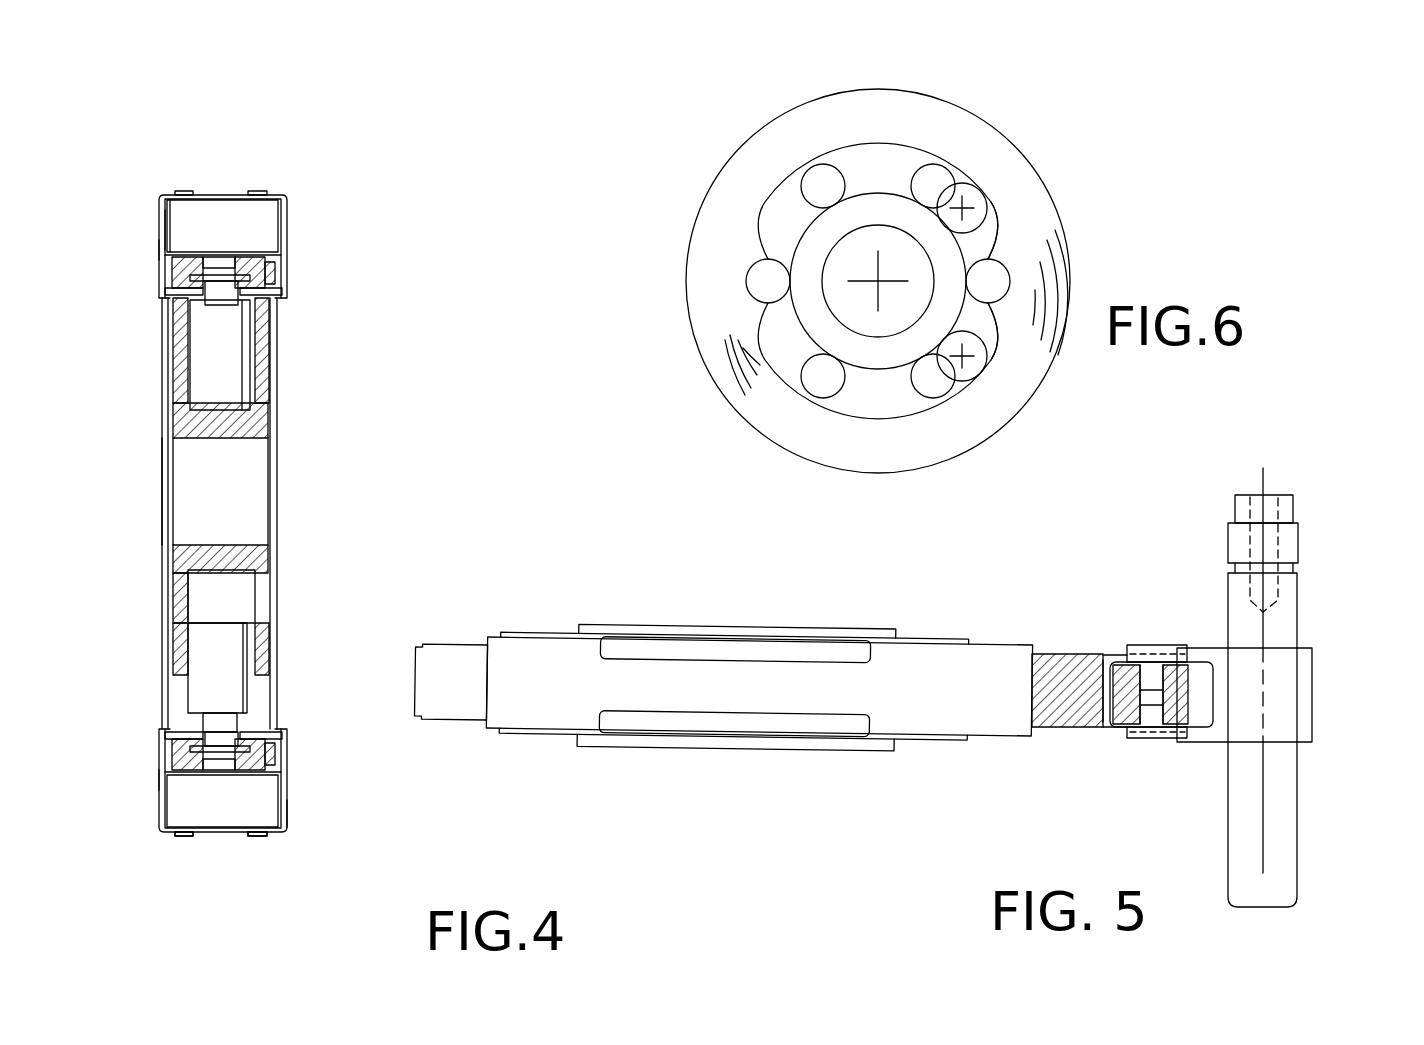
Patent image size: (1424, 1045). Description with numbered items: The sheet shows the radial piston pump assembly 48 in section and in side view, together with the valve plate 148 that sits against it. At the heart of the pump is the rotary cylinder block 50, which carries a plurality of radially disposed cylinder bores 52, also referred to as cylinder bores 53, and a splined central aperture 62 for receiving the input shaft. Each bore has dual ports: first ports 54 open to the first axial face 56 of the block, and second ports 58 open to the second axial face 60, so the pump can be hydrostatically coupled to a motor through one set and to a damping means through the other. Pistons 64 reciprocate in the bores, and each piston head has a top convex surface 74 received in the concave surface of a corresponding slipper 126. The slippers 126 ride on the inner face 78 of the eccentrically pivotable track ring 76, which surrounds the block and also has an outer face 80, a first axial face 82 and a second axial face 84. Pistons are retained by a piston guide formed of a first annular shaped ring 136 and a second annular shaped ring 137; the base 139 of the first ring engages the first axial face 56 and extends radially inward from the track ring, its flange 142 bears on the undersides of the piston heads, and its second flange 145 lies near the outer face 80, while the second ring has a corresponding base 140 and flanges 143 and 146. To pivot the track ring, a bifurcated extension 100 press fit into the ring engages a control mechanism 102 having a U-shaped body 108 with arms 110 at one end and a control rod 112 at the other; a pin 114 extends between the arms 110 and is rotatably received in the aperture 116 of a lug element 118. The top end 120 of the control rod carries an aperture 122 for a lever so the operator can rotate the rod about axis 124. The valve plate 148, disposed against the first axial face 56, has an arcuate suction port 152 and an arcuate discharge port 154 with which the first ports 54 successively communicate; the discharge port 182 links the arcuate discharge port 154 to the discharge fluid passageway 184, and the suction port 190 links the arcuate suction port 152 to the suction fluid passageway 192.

In FIG. 4, the radial piston pump assembly 48 is at (330, 374).
In FIG. 5, the radial piston pump assembly 48 is at (620, 786).
In FIG. 4, the rotary cylinder block 50 is at (175, 318).
In FIG. 4, the cylinder bores 52 is at (245, 583).
In FIG. 6, the cylinder bores 53 is at (822, 183).
In FIG. 4, the first ports 54 is at (180, 380).
In FIG. 4, the first axial face 56 is at (172, 640).
In FIG. 4, the second ports 58 is at (262, 388).
In FIG. 4, the second axial face 60 is at (270, 672).
In FIG. 4, the splined central aperture 62 is at (250, 485).
In FIG. 4, the pistons 64 is at (260, 355).
In FIG. 4, the top convex surface 74 is at (207, 253).
In FIG. 4, the track ring 76 is at (255, 215).
In FIG. 5, the track ring 76 is at (515, 710).
In FIG. 4, the inner face 78 is at (170, 232).
In FIG. 4, the outer face 80 is at (212, 192).
In FIG. 4, the first axial face 82 is at (178, 206).
In FIG. 4, the second axial face 84 is at (283, 808).
In FIG. 5, the bifurcated extension 100 is at (1058, 650).
In FIG. 5, the control mechanism 102 is at (1315, 680).
In FIG. 5, the U-shaped body 108 is at (1300, 715).
In FIG. 5, the arms 110 is at (1195, 655).
In FIG. 5, the control rod 112 is at (1280, 610).
In FIG. 5, the pin 114 is at (1128, 675).
In FIG. 5, the aperture 116 is at (1145, 740).
In FIG. 5, the lug element 118 is at (1085, 730).
In FIG. 5, the top end 120 is at (1290, 505).
In FIG. 5, the aperture 122 is at (1270, 495).
In FIG. 5, the axis 124 is at (1260, 470).
In FIG. 4, the slippers 126 is at (275, 265).
In FIG. 4, the first annular shaped ring 136 is at (158, 739).
In FIG. 4, the second annular shaped ring 137 is at (290, 190).
In FIG. 4, the base 139 is at (165, 247).
In FIG. 4, the base 140 is at (285, 225).
In FIG. 4, the flange 142 is at (168, 305).
In FIG. 4, the flange 143 is at (268, 720).
In FIG. 4, the second flange 145 is at (172, 836).
In FIG. 4, the flange 146 is at (262, 836).
In FIG. 5, the valve plate 148 is at (720, 745).
In FIG. 6, the valve plate 148 is at (1050, 183).
In FIG. 6, the suction port 152 is at (1000, 325).
In FIG. 6, the discharge port 154 is at (1000, 238).
In FIG. 6, the discharge port 182 is at (965, 205).
In FIG. 6, the discharge fluid passageway 184 is at (975, 197).
In FIG. 6, the suction port 190 is at (972, 380).
In FIG. 6, the suction fluid passageway 192 is at (985, 360).